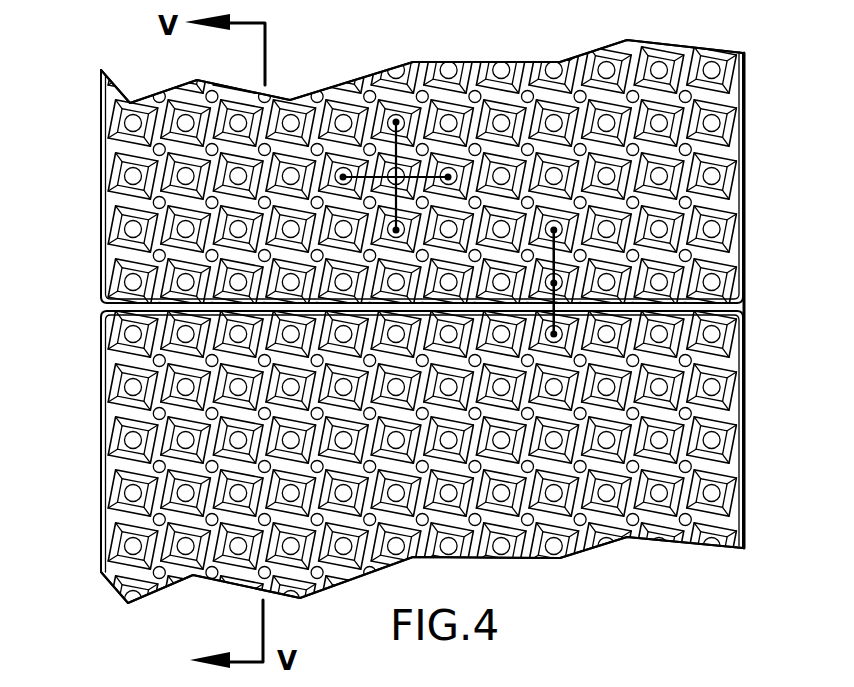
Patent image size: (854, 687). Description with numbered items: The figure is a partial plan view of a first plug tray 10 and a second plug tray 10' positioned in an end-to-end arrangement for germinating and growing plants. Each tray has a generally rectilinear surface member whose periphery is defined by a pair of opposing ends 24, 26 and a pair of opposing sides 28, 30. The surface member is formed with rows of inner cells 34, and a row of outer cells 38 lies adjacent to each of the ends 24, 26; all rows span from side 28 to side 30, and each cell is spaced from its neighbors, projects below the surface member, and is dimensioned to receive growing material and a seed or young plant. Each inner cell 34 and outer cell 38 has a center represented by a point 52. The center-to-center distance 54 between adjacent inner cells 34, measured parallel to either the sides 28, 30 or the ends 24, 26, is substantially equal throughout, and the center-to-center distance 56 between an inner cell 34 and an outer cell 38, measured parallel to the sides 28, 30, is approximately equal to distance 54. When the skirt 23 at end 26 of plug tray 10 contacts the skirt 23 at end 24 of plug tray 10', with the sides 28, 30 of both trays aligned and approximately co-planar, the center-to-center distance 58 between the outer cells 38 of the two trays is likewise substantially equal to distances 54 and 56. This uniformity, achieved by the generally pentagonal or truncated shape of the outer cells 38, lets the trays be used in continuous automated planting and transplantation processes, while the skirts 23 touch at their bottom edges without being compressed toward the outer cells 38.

The plug tray 10 is at (389, 457).
The adjacent plug tray 10' is at (385, 171).
The skirt 23 is at (105, 300).
The end 24 is at (217, 305).
The end 26 is at (217, 310).
The side 28 is at (101, 103).
The side 30 is at (100, 558).
The inner cell 34 is at (117, 168).
The outer cell 38 is at (127, 282).
The point 52 is at (358, 177).
The center-to-center distance 54 is at (343, 176).
The center-to-center distance 56 is at (556, 258).
The center-to-center distance 58 is at (554, 334).